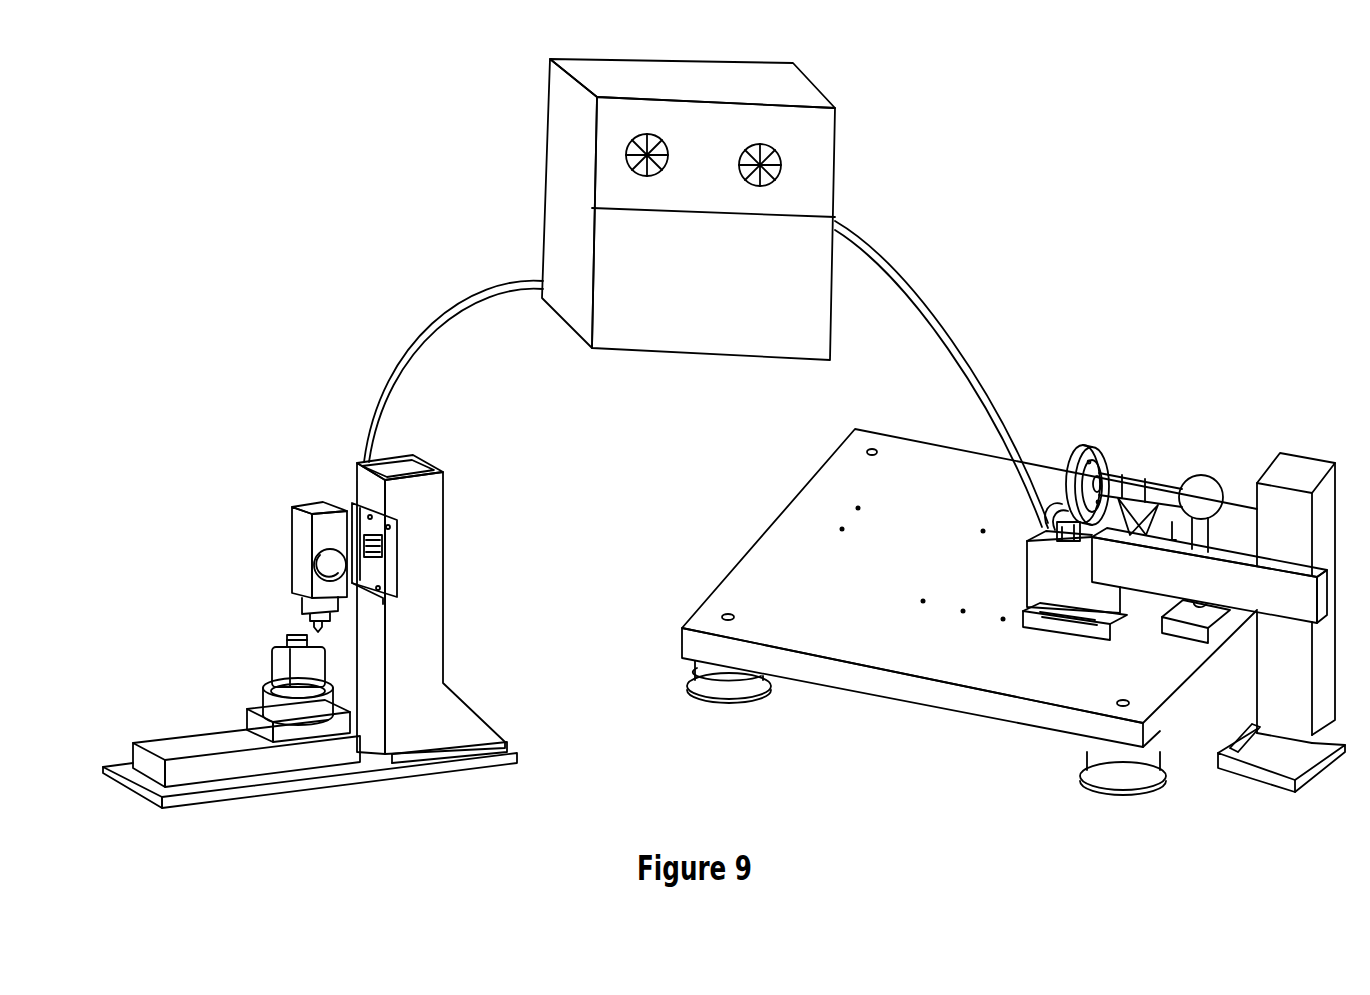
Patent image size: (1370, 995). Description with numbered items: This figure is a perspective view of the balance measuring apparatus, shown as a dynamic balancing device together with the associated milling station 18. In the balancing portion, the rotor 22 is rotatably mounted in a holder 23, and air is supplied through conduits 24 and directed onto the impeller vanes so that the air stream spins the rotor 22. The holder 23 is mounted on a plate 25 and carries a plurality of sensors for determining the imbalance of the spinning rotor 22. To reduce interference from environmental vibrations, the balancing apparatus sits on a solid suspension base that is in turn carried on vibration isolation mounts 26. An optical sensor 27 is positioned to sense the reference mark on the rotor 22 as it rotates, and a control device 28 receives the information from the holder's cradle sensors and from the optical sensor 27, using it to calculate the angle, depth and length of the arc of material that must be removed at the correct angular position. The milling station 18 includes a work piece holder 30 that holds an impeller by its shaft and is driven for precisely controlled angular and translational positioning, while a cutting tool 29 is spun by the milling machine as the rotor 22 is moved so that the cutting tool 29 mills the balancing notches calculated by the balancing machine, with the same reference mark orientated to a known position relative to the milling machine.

The milling station 18 is at (432, 580).
The rotor 22 is at (1088, 447).
The holder 23 is at (1173, 507).
The conduits 24 is at (1063, 530).
The plate 25 is at (772, 585).
The vibration isolation mounts 26 is at (732, 683).
The optical sensor 27 is at (1125, 477).
The control device 28 is at (563, 152).
The cutting tool 29 is at (318, 632).
The work piece holder 30 is at (297, 662).